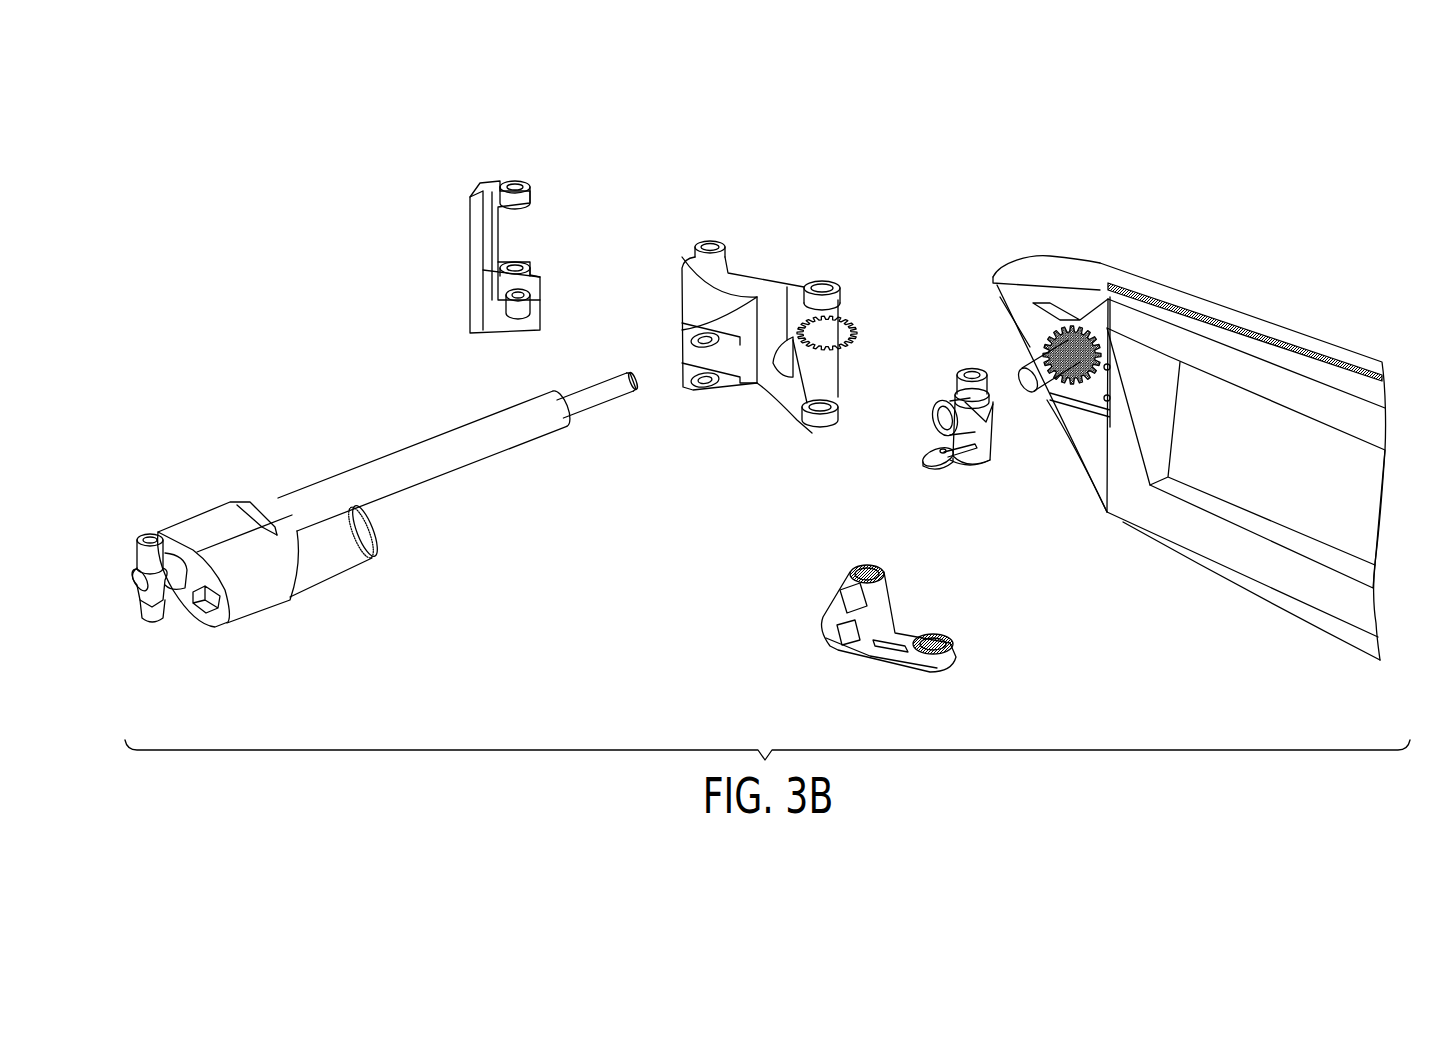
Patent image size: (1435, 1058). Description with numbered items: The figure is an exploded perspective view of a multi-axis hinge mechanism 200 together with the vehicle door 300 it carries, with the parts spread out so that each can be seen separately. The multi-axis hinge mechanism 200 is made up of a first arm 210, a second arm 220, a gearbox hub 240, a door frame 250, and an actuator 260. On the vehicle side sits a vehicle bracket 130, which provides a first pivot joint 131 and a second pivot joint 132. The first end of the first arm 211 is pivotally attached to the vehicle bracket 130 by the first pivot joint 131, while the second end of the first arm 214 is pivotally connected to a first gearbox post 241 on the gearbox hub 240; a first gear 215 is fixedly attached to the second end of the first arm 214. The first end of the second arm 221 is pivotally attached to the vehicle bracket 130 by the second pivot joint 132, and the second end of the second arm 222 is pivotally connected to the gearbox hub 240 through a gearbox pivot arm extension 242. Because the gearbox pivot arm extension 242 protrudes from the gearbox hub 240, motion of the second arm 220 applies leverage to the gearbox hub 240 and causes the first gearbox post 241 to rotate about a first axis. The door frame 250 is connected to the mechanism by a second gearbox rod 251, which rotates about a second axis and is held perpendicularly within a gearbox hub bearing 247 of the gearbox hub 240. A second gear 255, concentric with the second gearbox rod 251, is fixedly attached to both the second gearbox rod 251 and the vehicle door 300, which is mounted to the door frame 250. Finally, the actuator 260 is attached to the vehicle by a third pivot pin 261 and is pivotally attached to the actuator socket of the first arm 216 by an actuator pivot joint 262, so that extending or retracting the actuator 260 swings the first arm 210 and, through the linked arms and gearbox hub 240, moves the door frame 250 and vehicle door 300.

The multi-axis hinge mechanism 200 is at (190, 204).
The vehicle bracket 130 is at (487, 267).
The first pivot joint 131 is at (523, 263).
The second pivot joint 132 is at (530, 317).
The first arm 210 is at (767, 308).
The first end of the first arm 211 is at (702, 267).
The second end of the first arm 214 is at (806, 425).
The first gear 215 is at (822, 307).
The actuator socket of the first arm 216 is at (690, 337).
The second arm 220 is at (848, 637).
The first end of the second arm 221 is at (867, 572).
The second end of the second arm 222 is at (947, 658).
The gearbox hub 240 is at (990, 425).
The first gearbox post 241 is at (970, 370).
The gearbox pivot arm extension 242 is at (956, 466).
The gearbox hub bearing 247 is at (943, 402).
The door frame 250 is at (1135, 380).
The second gearbox rod 251 is at (1027, 366).
The second gear 255 is at (1078, 322).
The actuator 260 is at (328, 482).
The third pivot pin 261 is at (160, 598).
The actuator pivot joint 262 is at (623, 390).
The vehicle door 300 is at (1365, 508).